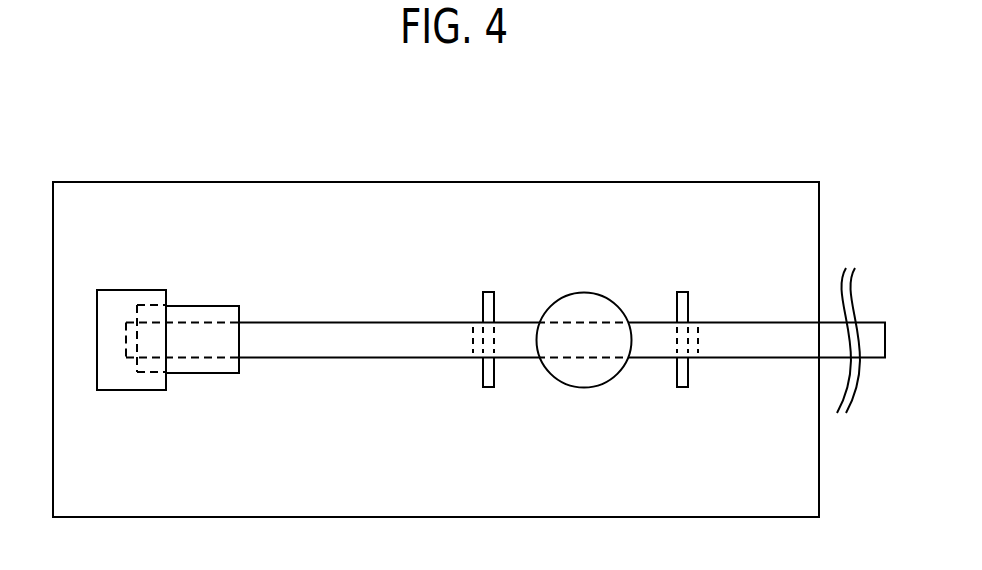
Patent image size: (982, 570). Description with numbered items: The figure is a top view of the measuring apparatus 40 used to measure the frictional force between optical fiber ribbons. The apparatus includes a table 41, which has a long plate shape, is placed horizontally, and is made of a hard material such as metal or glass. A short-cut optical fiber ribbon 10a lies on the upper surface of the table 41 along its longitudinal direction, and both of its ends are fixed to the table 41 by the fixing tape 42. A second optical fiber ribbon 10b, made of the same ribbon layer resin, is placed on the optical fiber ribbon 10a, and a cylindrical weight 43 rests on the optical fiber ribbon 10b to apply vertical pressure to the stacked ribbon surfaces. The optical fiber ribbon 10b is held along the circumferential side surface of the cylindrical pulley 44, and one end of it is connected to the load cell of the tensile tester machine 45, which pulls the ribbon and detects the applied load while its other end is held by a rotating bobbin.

The measuring apparatus 40 is at (857, 79).
The table 41 is at (364, 181).
The fixing tape 42 is at (485, 293).
The weight 43 is at (565, 295).
The pulley 44 is at (222, 306).
The tensile tester machine 45 is at (134, 291).
The optical fiber ribbon 10a is at (588, 322).
The optical fiber ribbon 10b is at (760, 322).